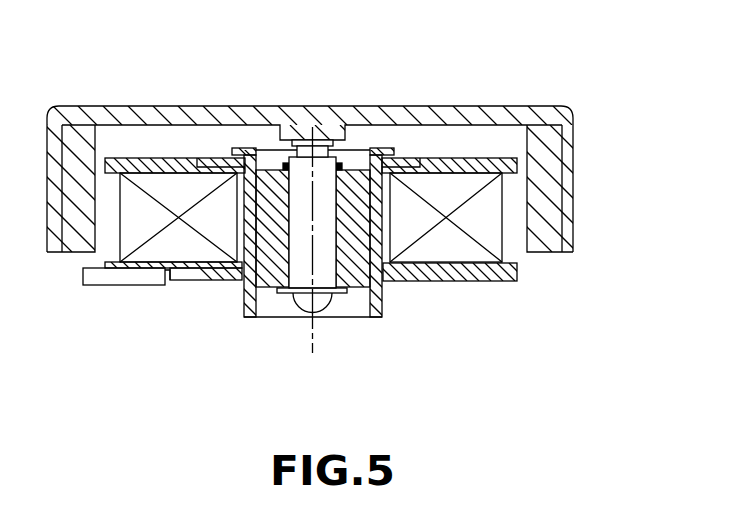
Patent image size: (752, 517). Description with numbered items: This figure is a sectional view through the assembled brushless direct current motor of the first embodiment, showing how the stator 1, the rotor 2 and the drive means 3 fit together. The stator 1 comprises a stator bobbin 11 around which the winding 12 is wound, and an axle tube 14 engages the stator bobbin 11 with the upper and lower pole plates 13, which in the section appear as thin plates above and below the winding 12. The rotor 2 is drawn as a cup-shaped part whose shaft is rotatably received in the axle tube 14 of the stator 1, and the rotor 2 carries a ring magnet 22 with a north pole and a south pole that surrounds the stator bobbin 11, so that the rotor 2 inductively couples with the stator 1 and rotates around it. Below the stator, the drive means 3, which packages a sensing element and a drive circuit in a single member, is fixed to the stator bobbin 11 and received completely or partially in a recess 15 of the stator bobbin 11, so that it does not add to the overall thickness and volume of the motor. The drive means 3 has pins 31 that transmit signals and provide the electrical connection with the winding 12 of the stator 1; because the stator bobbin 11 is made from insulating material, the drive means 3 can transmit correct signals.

The stator 1 is at (325, 300).
The rotor 2 is at (447, 108).
The drive means 3 is at (142, 277).
The stator bobbin 11 is at (492, 158).
The winding 12 is at (490, 226).
The upper and lower pole plates 13 is at (210, 158).
The axle tube 14 is at (373, 318).
The recess 15 is at (202, 282).
The ring magnet 22 is at (550, 242).
The pins 31 is at (180, 281).